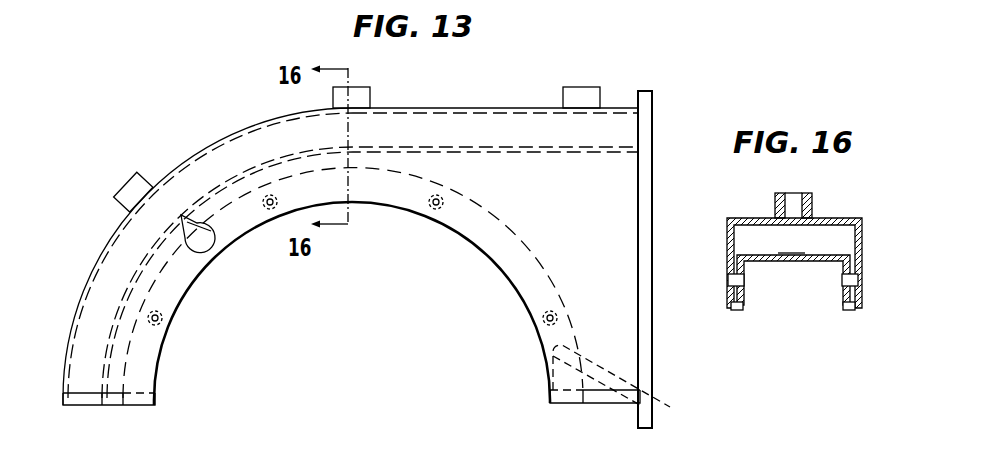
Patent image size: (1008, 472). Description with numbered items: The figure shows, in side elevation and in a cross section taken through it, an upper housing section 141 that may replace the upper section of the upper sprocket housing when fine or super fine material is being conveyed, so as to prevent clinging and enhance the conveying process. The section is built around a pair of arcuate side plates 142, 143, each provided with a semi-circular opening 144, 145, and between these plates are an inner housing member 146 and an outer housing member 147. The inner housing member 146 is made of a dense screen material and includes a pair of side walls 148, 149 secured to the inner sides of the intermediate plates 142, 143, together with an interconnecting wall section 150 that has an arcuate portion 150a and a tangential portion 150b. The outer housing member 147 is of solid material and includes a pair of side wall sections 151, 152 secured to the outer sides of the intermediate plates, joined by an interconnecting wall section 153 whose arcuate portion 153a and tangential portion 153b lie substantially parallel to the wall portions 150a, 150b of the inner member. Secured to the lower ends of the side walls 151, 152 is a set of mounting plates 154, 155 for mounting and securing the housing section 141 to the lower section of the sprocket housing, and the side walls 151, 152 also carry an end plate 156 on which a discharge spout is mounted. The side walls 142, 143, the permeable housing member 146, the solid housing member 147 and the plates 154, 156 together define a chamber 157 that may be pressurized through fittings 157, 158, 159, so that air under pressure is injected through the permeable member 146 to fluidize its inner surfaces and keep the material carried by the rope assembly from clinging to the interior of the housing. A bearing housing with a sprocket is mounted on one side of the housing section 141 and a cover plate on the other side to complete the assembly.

In FIG. 13, the upper housing section 141 is at (642, 43).
In FIG. 13, the arcuate side plate 142 is at (627, 337).
In FIG. 16, the arcuate side plate 142 is at (735, 286).
In FIG. 16, the arcuate side plate 143 is at (855, 292).
In FIG. 16, the semi-circular opening 144 is at (738, 308).
In FIG. 16, the semi-circular opening 145 is at (832, 290).
In FIG. 16, the inner housing member 146 is at (784, 262).
In FIG. 16, the outer housing member 147 is at (835, 218).
In FIG. 16, the side wall 148 is at (743, 297).
In FIG. 16, the side wall 149 is at (830, 293).
In FIG. 16, the interconnecting wall section 150 is at (760, 264).
In FIG. 13, the arcuate portion 150a is at (143, 263).
In FIG. 13, the tangential portion 150b is at (522, 152).
In FIG. 16, the side wall section 151 is at (727, 250).
In FIG. 16, the side wall section 152 is at (862, 256).
In FIG. 13, the interconnecting wall section 153 is at (266, 125).
In FIG. 16, the interconnecting wall section 153 is at (762, 218).
In FIG. 13, the arcuate portion 153a is at (210, 150).
In FIG. 13, the tangential portion 153b is at (505, 108).
In FIG. 13, the mounting plate 154 is at (80, 404).
In FIG. 13, the mounting plate 155 is at (597, 400).
In FIG. 13, the end plate 156 is at (653, 189).
In FIG. 13, the chamber 157 is at (117, 201).
In FIG. 16, the chamber 157 is at (796, 242).
In FIG. 13, the fitting 158 is at (366, 100).
In FIG. 13, the fitting 159 is at (598, 98).